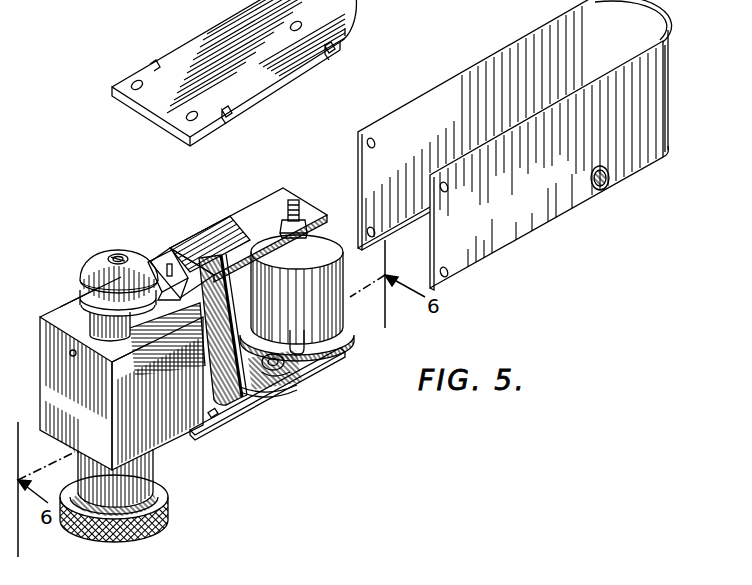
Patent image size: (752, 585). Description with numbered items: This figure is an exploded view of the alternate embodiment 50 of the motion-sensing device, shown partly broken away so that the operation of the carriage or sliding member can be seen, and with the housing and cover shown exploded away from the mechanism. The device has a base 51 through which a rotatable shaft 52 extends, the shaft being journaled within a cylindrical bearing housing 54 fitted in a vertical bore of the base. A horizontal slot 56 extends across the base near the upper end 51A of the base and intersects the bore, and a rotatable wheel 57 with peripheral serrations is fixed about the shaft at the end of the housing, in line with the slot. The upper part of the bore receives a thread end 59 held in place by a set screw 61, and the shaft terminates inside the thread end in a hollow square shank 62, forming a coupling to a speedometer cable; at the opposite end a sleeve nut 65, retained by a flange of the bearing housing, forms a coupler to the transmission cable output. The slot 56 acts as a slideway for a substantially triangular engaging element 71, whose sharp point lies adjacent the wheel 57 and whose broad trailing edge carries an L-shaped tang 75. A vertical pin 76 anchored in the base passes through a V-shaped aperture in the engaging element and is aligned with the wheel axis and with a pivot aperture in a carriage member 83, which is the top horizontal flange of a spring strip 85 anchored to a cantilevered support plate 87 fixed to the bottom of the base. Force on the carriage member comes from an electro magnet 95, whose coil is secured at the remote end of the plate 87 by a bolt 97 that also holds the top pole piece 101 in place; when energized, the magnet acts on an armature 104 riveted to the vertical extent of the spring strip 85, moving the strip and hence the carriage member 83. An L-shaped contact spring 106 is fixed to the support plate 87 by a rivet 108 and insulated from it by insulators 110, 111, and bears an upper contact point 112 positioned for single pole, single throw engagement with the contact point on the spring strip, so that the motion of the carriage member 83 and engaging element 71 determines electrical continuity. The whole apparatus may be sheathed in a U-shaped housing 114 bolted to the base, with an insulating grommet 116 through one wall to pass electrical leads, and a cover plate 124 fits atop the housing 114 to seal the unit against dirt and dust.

The alternate embodiment 50 is at (36, 334).
The base 51 is at (68, 397).
The upper end of the base 51A is at (78, 297).
The rotatable shaft 52 is at (118, 254).
The cylindrical bearing housing 54 is at (152, 462).
The horizontal slot 56 is at (248, 403).
The wheel 57 is at (148, 354).
The thread end 59 is at (86, 262).
The set screw 61 is at (70, 353).
The hollow square shank 62 is at (112, 256).
The sleeve nut 65 is at (167, 522).
The engaging element 71 is at (168, 275).
The L-shaped tang 75 is at (164, 257).
The pin 76 is at (185, 348).
The carriage member 83 is at (232, 222).
The spring strip 85 is at (252, 393).
The cantilevered support plate 87 is at (214, 416).
The electro magnet 95 is at (338, 341).
The bolt 97 is at (303, 210).
The top pole piece 101 is at (283, 197).
The armature 104 is at (182, 250).
The L-shaped contact spring 106 is at (304, 356).
The rivet 108 is at (274, 370).
The insulator 110 is at (290, 378).
The insulator 111 is at (280, 368).
The upper contact point 112 is at (222, 280).
The U-shaped housing 114 is at (537, 232).
The insulating grommet 116 is at (598, 191).
The cover plate 124 is at (290, 80).